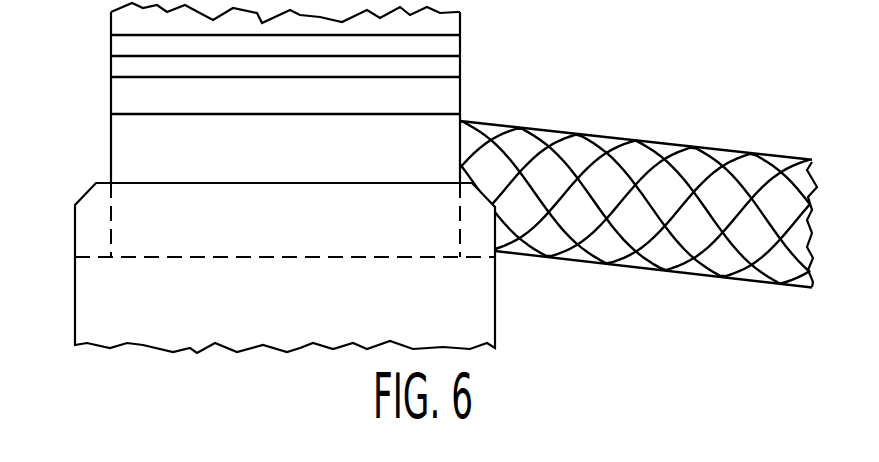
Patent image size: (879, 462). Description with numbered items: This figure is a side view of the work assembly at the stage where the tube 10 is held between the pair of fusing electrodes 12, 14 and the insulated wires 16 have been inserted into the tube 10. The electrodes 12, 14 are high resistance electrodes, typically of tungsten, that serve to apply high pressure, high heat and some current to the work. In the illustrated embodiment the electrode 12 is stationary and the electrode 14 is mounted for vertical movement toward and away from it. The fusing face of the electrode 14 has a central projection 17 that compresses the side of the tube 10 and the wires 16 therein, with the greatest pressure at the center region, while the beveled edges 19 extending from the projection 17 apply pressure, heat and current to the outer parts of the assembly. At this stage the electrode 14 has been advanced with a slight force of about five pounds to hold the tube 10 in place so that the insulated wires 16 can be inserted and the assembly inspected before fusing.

The tube 10 is at (140, 155).
The fusing electrode 12 is at (453, 312).
The fusing electrode 14 is at (437, 25).
The insulated wires 16 is at (603, 170).
The central projection 17 is at (437, 97).
The beveled edges 19 is at (147, 67).